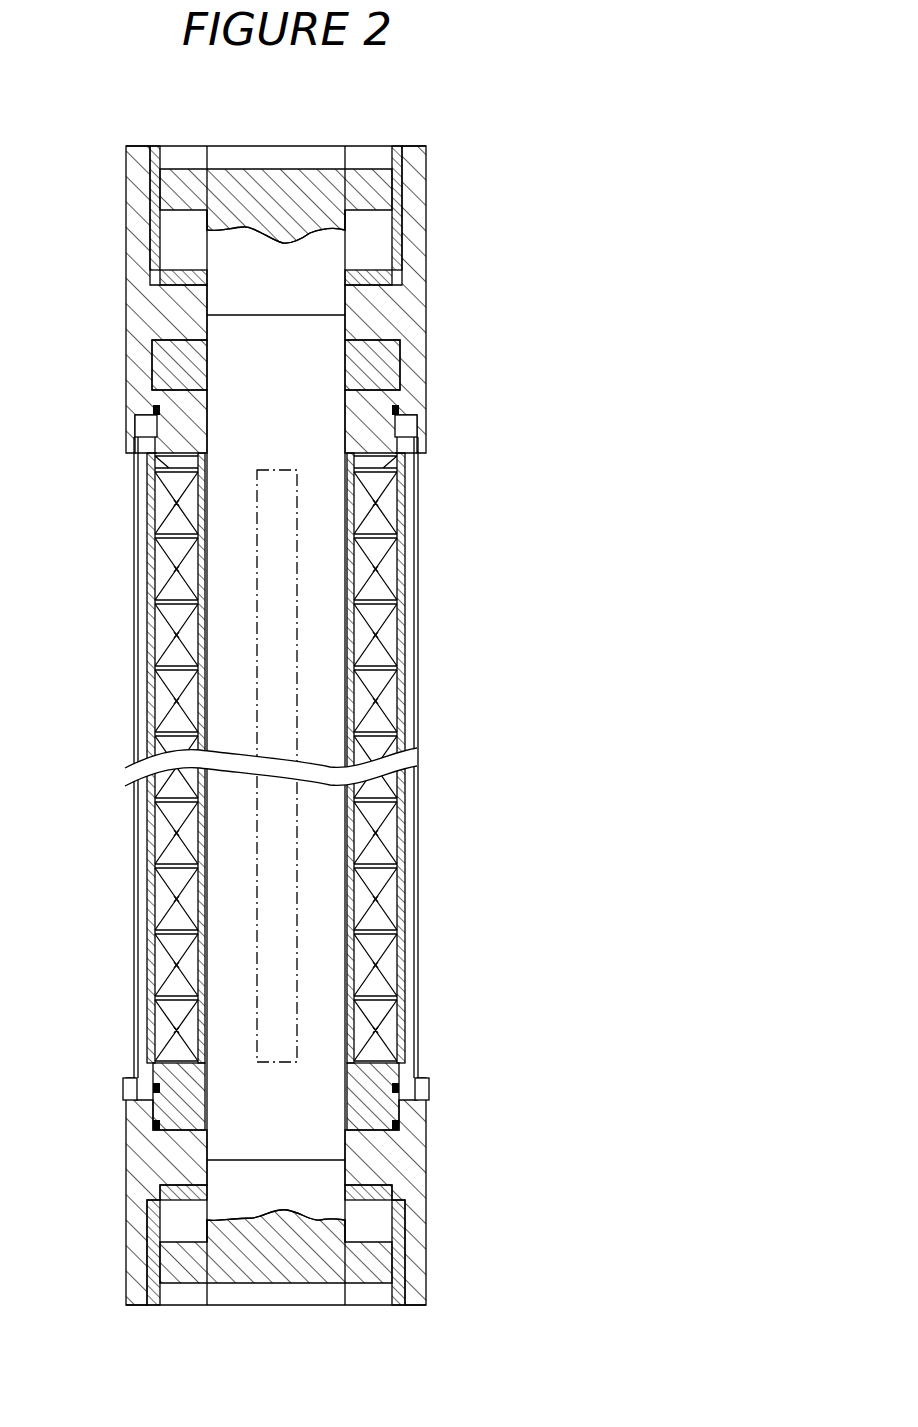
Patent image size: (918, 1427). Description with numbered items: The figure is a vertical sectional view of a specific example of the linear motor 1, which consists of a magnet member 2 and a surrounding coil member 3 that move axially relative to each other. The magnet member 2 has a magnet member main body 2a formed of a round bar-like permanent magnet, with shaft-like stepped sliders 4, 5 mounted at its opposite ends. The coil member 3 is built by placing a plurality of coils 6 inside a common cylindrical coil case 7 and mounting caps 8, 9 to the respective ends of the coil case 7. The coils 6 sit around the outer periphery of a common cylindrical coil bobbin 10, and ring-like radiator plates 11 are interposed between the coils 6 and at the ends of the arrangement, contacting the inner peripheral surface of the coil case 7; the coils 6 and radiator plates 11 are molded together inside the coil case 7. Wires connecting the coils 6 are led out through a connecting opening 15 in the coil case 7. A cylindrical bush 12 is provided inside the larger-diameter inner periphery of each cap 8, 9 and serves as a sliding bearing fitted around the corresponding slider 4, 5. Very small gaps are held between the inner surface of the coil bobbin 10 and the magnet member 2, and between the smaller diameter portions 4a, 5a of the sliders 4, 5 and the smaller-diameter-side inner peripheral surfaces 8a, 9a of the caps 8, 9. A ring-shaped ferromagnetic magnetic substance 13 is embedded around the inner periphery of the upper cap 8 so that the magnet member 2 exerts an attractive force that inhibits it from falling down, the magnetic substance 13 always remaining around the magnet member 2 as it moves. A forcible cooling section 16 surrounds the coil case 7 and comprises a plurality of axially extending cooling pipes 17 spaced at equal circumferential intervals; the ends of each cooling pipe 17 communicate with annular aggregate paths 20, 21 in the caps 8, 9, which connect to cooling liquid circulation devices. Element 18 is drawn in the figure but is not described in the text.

The linear motor 1 is at (298, 720).
The magnet member 2 is at (327, 702).
The magnet member main body 2a is at (322, 822).
The coil member 3 is at (306, 767).
The slider 4 is at (283, 190).
The smaller diameter portion of slider 4a is at (325, 255).
The slider 5 is at (320, 1268).
The smaller diameter portion of slider 5a is at (322, 1182).
The coil 6 is at (388, 570).
The coil case 7 is at (397, 547).
The cap 8 is at (122, 295).
The smaller-diameter-side inner peripheral surface of cap 8a is at (338, 309).
The cap 9 is at (122, 1163).
The smaller-diameter-side inner peripheral surface of cap 9a is at (342, 1156).
The coil bobbin 10 is at (350, 967).
The radiator plate 11 is at (163, 487).
The cylindrical bush 12 is at (152, 170).
The magnetic substance 13 is at (385, 360).
The connecting opening 15 is at (254, 836).
The forcible cooling section 16 is at (418, 850).
The cooling pipe 17 is at (408, 698).
The outer yoke 18 is at (413, 652).
The aggregate path 20 is at (407, 428).
The aggregate path 21 is at (405, 1107).